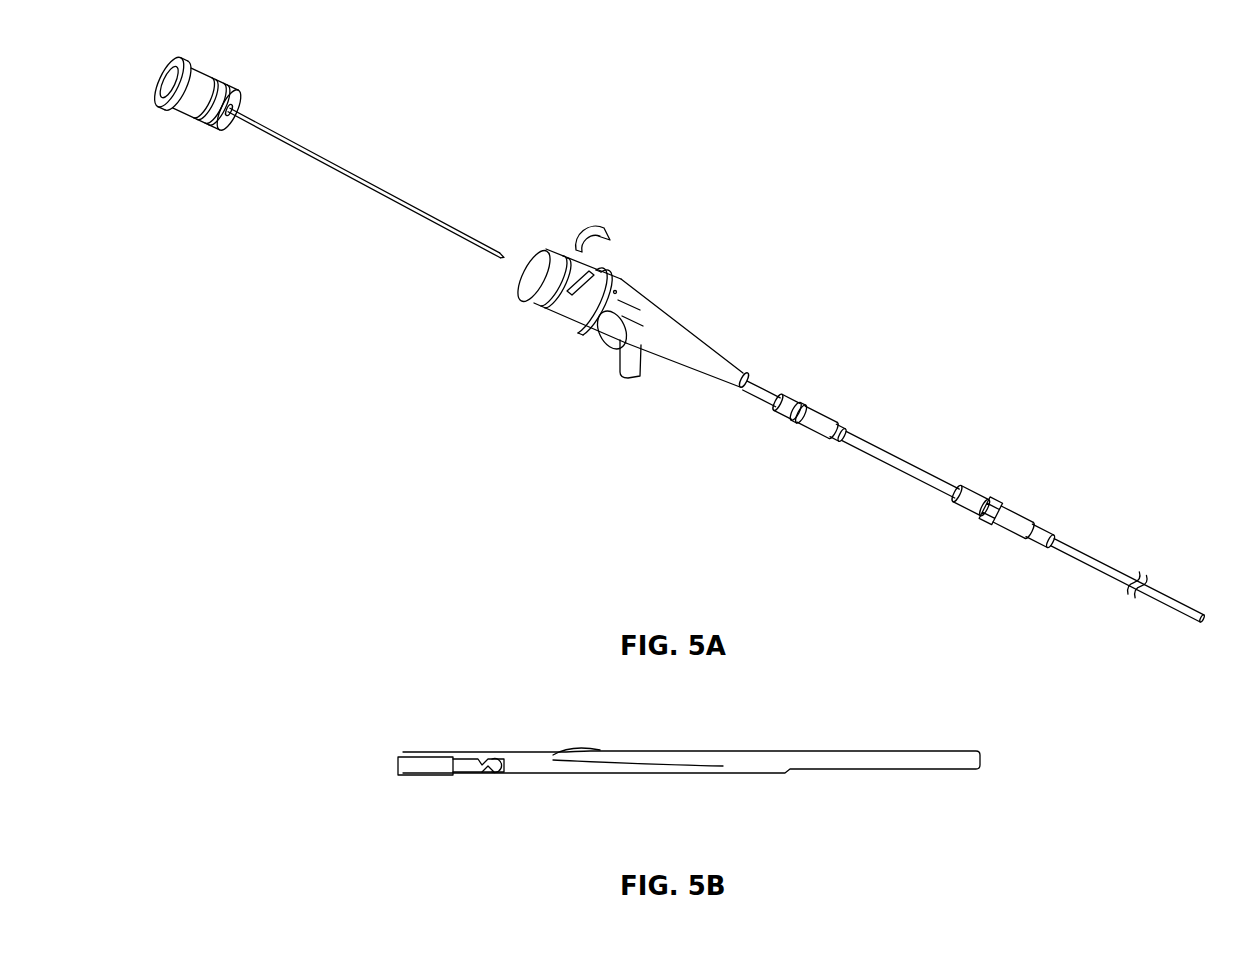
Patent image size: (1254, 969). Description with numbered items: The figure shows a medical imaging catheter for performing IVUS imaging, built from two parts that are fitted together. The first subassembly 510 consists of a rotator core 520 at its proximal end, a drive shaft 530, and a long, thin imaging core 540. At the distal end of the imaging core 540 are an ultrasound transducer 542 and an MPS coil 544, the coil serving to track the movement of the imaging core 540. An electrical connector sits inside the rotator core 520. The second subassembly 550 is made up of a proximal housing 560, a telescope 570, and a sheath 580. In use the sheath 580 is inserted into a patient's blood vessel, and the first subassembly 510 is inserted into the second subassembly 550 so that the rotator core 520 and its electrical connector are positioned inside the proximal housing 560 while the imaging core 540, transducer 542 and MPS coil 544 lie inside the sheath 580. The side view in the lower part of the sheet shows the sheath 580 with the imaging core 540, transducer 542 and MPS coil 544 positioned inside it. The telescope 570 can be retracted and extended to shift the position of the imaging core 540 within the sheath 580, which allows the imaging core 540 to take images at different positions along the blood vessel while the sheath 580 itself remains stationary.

In FIG. 5A, the first subassembly 510 is at (533, 208).
In FIG. 5A, the rotator core 520 is at (183, 116).
In FIG. 5A, the drive shaft 530 is at (246, 126).
In FIG. 5A, the imaging core 540 is at (358, 181).
In FIG. 5B, the imaging core 540 is at (423, 765).
In FIG. 5A, the ultrasound transducer 542 is at (505, 263).
In FIG. 5B, the ultrasound transducer 542 is at (498, 775).
In FIG. 5A, the MPS coil 544 is at (500, 259).
In FIG. 5B, the MPS coil 544 is at (486, 753).
In FIG. 5A, the second subassembly 550 is at (1232, 480).
In FIG. 5A, the proximal housing 560 is at (560, 320).
In FIG. 5A, the telescope 570 is at (917, 507).
In FIG. 5A, the sheath 580 is at (1192, 647).
In FIG. 5B, the sheath 580 is at (598, 776).